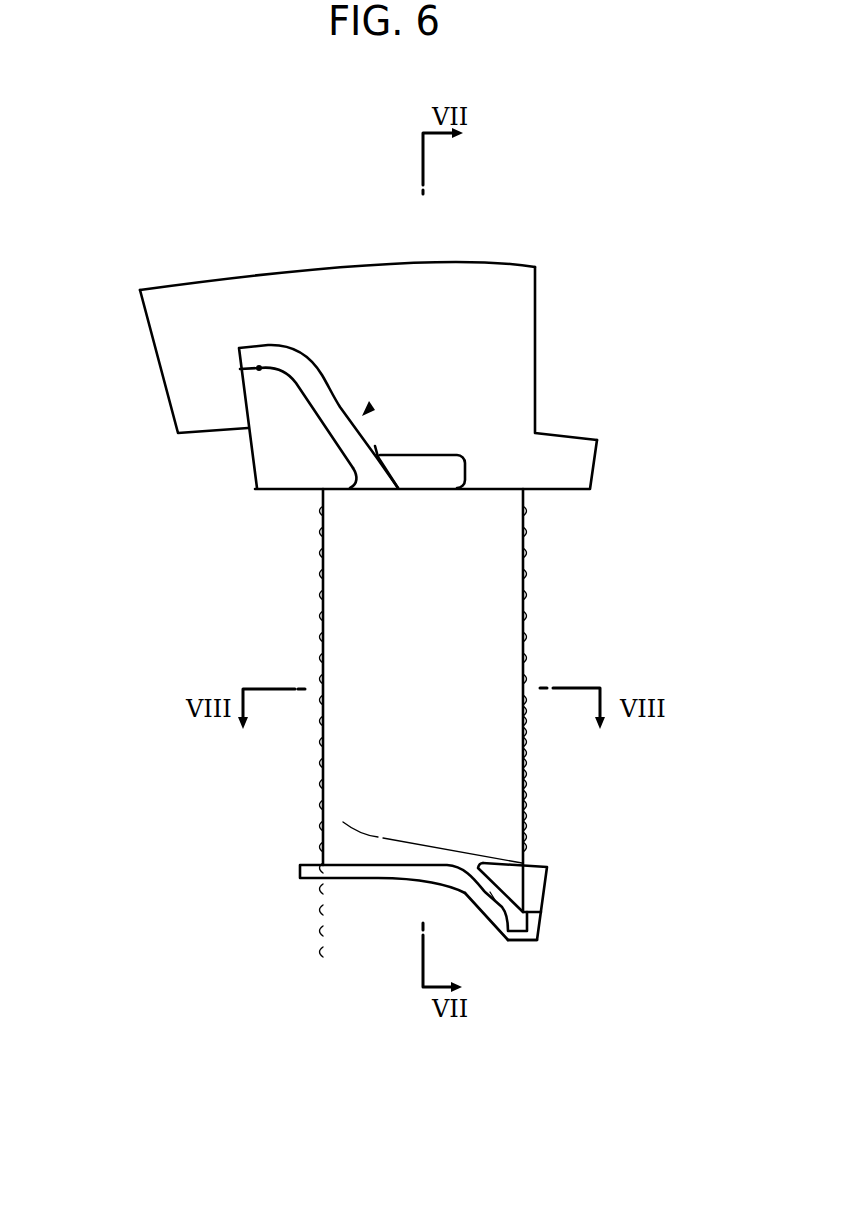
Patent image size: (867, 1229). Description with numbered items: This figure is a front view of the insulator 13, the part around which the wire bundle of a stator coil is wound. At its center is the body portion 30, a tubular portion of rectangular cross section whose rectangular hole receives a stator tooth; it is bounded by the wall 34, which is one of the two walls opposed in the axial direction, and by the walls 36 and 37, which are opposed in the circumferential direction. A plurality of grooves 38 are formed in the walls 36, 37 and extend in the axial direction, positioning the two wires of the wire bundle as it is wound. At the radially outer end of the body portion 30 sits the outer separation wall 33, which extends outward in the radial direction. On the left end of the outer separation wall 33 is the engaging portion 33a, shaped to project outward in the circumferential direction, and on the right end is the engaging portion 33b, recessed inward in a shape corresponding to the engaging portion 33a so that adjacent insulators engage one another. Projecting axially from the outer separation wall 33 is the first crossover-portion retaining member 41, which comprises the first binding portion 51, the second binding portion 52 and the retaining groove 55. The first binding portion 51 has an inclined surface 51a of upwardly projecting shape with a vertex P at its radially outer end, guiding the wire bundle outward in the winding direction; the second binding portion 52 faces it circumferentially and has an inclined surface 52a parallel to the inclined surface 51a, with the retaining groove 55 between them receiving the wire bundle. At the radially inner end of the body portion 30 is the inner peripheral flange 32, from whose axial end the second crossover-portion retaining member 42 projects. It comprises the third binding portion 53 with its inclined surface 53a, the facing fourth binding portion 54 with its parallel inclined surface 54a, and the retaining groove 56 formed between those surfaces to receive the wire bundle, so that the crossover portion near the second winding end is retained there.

The insulator 13 is at (522, 241).
The outer separation wall 33 is at (277, 297).
The engaging portion 33a is at (185, 343).
The engaging portion 33b is at (537, 316).
The first binding portion 51 is at (267, 401).
The inclined surface 51a is at (320, 418).
The retaining groove 55 is at (368, 475).
The vertex P is at (259, 366).
The first crossover-portion retaining member 41 is at (368, 410).
The second binding portion 52 is at (443, 467).
The inclined surface 52a is at (360, 490).
The body portion 30 is at (532, 518).
The wall 34 is at (378, 628).
The wall 36 is at (523, 605).
The wall 37 is at (322, 582).
The grooves 38 is at (320, 794).
The inner peripheral flange 32 is at (350, 880).
The third binding portion 53 is at (445, 880).
The inclined surface 53a is at (497, 860).
The fourth binding portion 54 is at (530, 890).
The inclined surface 54a is at (505, 916).
The retaining groove 56 is at (496, 902).
The second crossover-portion retaining member 42 is at (537, 955).